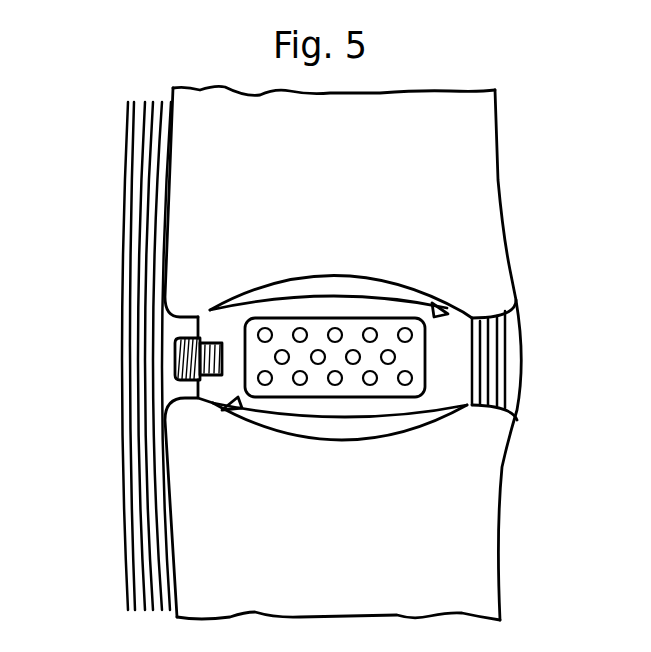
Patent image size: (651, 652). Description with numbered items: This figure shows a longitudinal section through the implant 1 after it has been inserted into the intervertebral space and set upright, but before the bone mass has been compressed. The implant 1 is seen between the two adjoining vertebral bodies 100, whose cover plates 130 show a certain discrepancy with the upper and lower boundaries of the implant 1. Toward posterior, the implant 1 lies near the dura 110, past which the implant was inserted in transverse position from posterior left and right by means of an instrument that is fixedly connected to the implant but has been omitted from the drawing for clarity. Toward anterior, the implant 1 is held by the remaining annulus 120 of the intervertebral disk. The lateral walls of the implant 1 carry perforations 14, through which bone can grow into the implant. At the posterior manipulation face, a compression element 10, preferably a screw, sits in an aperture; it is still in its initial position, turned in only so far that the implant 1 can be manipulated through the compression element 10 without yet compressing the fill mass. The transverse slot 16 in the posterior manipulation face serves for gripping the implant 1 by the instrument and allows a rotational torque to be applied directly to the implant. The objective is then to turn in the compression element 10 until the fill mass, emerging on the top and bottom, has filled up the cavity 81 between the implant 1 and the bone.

The implant 1 is at (321, 368).
The compression element 10 is at (178, 350).
The perforations 14 is at (408, 381).
The transverse slot 16 is at (210, 403).
The cavity 81 is at (270, 290).
The vertebral bodies 100 is at (498, 186).
The dura 110 is at (136, 185).
The remaining annulus 120 is at (505, 372).
The cover plates 130 is at (447, 309).